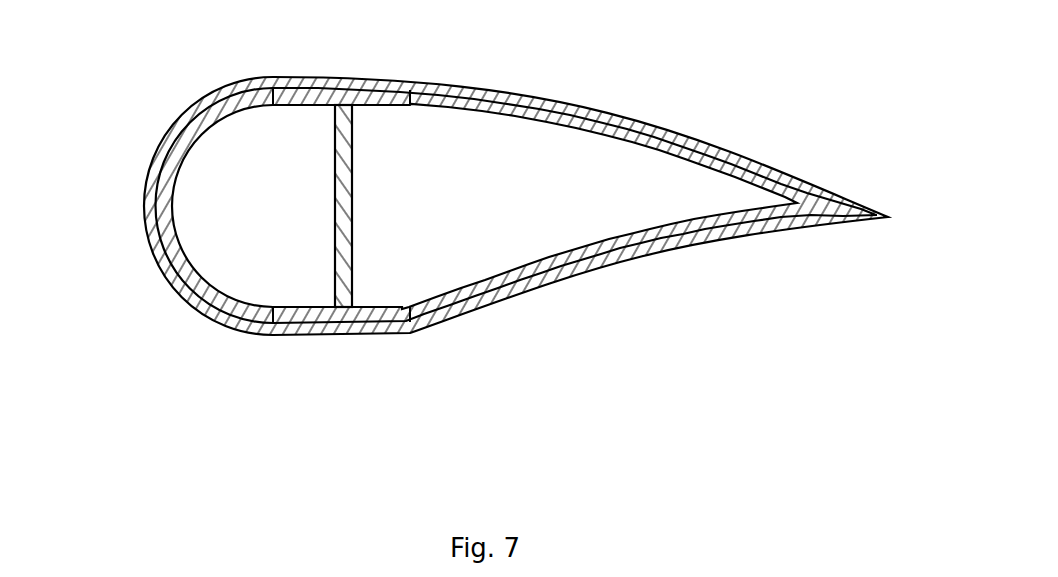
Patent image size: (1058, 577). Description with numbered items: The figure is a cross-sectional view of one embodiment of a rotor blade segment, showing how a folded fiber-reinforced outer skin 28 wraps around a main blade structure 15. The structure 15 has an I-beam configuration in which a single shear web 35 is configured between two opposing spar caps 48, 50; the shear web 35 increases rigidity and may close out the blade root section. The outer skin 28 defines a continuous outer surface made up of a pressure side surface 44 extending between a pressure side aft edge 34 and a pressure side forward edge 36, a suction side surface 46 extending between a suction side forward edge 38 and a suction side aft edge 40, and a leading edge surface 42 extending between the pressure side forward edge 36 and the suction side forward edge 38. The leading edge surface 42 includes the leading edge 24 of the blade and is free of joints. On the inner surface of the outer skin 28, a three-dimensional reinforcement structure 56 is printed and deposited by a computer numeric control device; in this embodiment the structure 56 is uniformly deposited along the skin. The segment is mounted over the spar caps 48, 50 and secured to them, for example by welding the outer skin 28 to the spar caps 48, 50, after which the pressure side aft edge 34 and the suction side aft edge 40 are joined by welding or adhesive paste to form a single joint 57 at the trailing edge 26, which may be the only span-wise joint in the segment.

The main blade structure 15 is at (390, 209).
The leading edge 24 is at (148, 200).
The trailing edge 26 is at (890, 217).
The outer skin 28 is at (490, 81).
The pressure side aft edge 34 is at (887, 220).
The shear web 35 is at (335, 185).
The pressure side forward edge 36 is at (258, 331).
The suction side forward edge 38 is at (262, 80).
The suction side aft edge 40 is at (887, 216).
The leading edge surface 42 is at (176, 298).
The pressure side surface 44 is at (621, 278).
The suction side surface 46 is at (617, 103).
The spar cap 48 is at (380, 106).
The spar cap 50 is at (371, 306).
The three-dimensional reinforcement structure 56 is at (178, 235).
The single joint 57 is at (887, 215).